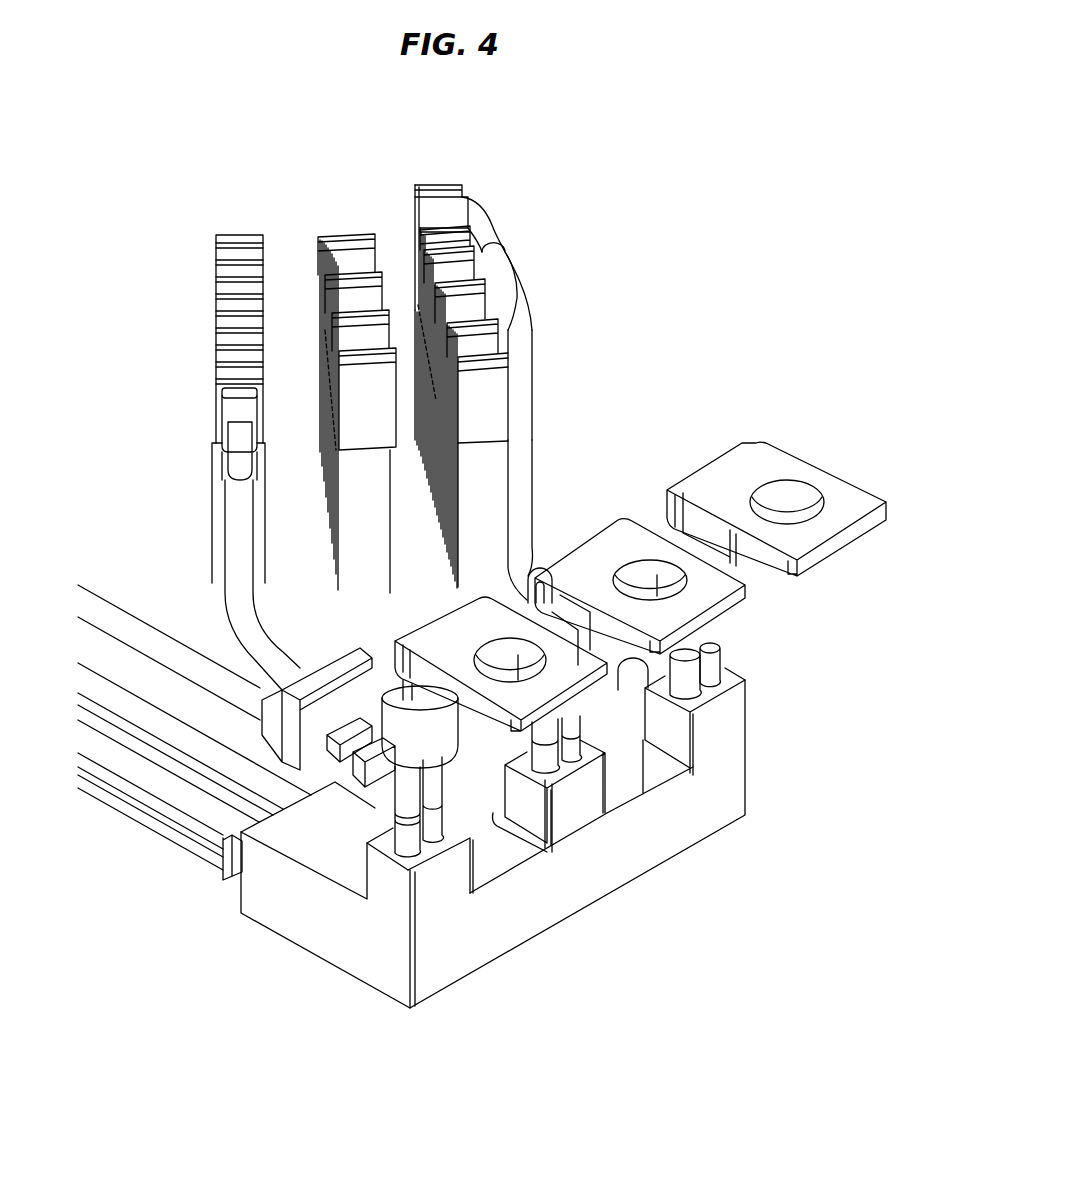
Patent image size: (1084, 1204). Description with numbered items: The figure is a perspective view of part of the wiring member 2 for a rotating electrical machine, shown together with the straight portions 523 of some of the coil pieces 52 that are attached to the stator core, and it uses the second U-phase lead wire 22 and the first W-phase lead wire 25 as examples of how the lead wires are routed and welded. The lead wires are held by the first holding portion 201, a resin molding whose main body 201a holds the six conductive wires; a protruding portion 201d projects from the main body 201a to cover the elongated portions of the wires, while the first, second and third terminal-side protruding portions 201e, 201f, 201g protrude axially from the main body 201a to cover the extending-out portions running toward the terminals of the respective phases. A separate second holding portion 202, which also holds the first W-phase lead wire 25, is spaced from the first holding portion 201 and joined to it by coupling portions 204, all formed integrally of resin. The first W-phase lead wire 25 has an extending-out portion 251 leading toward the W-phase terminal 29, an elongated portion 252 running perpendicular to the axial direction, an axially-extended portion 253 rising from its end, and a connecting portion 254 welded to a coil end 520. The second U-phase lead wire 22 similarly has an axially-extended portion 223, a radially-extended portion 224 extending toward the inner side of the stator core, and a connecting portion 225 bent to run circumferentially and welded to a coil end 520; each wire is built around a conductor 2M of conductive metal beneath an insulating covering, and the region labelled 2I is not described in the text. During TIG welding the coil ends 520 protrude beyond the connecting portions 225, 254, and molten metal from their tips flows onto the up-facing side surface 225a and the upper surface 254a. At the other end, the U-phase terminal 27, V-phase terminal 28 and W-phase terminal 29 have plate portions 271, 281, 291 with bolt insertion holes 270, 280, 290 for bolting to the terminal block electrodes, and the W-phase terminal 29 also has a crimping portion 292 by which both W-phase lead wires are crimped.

The wiring member for rotating electrical machine 2 is at (460, 1006).
The first holding portion 201 is at (310, 933).
The main body 201a is at (387, 977).
The protruding portion 201d is at (263, 897).
The first terminal-side protruding portion 201e is at (660, 713).
The second terminal-side protruding portion 201f is at (580, 802).
The third terminal-side protruding portion 201g is at (430, 880).
The second holding portion 202 is at (320, 678).
The coupling portion 204 is at (377, 717).
The second U-phase lead wire 22 is at (544, 368).
The axially-extended portion 223 is at (525, 465).
The radially-extended portion 224 is at (510, 290).
The connecting portion 225 is at (447, 213).
The up-facing side surface 225a is at (437, 205).
The conductor 2M is at (485, 232).
The bent portion 2I is at (502, 270).
The first W-phase lead wire 25 is at (211, 558).
The elongated portion 252 is at (287, 680).
The axially-extended portion 253 is at (233, 487).
The connecting portion 254 is at (235, 410).
The upper surface 254a is at (238, 393).
The U-phase terminal 27 is at (864, 456).
The bolt insertion hole 270 is at (783, 500).
The plate portion 271 is at (752, 455).
The V-phase terminal 28 is at (761, 588).
The bolt insertion hole 280 is at (685, 582).
The plate portion 281 is at (727, 607).
The W-phase terminal 29 is at (590, 690).
The bolt insertion hole 290 is at (598, 718).
The plate portion 291 is at (690, 722).
The crimping portion 292 is at (563, 807).
The extending-out portion 251 is at (437, 790).
The coil piece 52 is at (211, 379).
The coil end 520 is at (213, 398).
The straight portion 523 is at (217, 462).